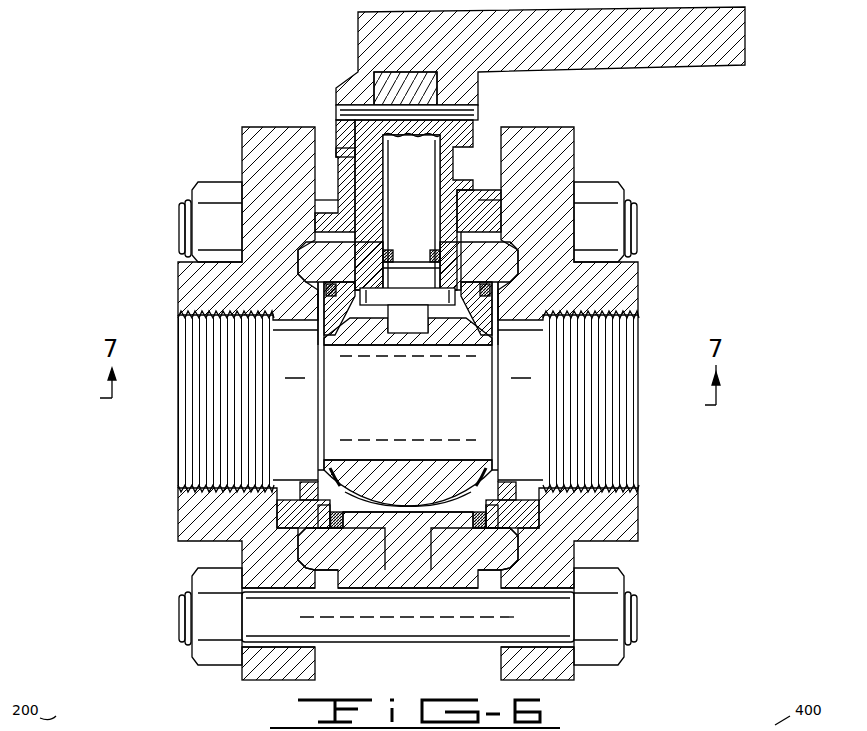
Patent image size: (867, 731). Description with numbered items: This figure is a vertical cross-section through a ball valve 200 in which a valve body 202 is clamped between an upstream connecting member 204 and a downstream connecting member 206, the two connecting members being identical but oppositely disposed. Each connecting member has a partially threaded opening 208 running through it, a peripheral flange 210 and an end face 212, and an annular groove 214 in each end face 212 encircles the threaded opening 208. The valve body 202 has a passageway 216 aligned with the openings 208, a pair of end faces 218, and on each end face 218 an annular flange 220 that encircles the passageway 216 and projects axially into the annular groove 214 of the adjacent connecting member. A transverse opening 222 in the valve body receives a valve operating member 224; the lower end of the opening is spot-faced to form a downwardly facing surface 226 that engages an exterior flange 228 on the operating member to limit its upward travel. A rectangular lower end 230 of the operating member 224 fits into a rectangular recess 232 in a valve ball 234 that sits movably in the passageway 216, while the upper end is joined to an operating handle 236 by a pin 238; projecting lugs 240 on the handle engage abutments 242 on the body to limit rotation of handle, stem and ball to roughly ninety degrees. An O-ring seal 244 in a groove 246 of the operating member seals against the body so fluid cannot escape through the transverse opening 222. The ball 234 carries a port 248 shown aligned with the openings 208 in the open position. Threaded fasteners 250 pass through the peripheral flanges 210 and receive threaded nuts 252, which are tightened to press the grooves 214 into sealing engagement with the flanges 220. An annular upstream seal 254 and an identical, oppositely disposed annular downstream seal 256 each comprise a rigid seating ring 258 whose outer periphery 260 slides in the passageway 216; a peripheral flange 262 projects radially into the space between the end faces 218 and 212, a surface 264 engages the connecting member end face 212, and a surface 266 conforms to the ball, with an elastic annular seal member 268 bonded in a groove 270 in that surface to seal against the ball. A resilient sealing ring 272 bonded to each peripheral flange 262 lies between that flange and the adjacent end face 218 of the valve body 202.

The ball valve 200 is at (409, 407).
The valve body 202 is at (403, 571).
The upstream connecting member 204 is at (190, 524).
The downstream connecting member 206 is at (630, 524).
The partially threaded opening 208 is at (188, 452).
The peripheral flange 210 is at (316, 668).
The end face 212 is at (318, 653).
The annular groove 214 is at (302, 536).
The passageway 216 is at (406, 506).
The end face 218 is at (333, 575).
The annular flange 220 is at (313, 558).
The transverse opening 222 is at (441, 218).
The valve operating member 224 is at (418, 166).
The downwardly facing surface 226 is at (453, 285).
The exterior flange 228 is at (418, 296).
The rectangular lower end 230 is at (402, 328).
The rectangular recess 232 is at (418, 335).
The valve ball 234 is at (355, 462).
The operating handle 236 is at (377, 35).
The pin 238 is at (477, 114).
The projecting lug 240 is at (338, 152).
The abutment 242 is at (340, 176).
The O-ring seal 244 is at (378, 257).
The groove 246 is at (398, 256).
The port 248 is at (422, 415).
The threaded fastener 250 is at (398, 632).
The threaded nut 252 is at (212, 656).
The annular upstream seal 254 is at (325, 303).
The annular downstream seal 256 is at (497, 312).
The seating ring 258 is at (317, 335).
The outer periphery 260 is at (345, 515).
The peripheral flange 262 is at (336, 524).
The surface 264 is at (318, 482).
The surface 266 is at (364, 491).
The elastic annular seal member 268 is at (465, 470).
The groove 270 is at (318, 468).
The sealing ring 272 is at (327, 530).